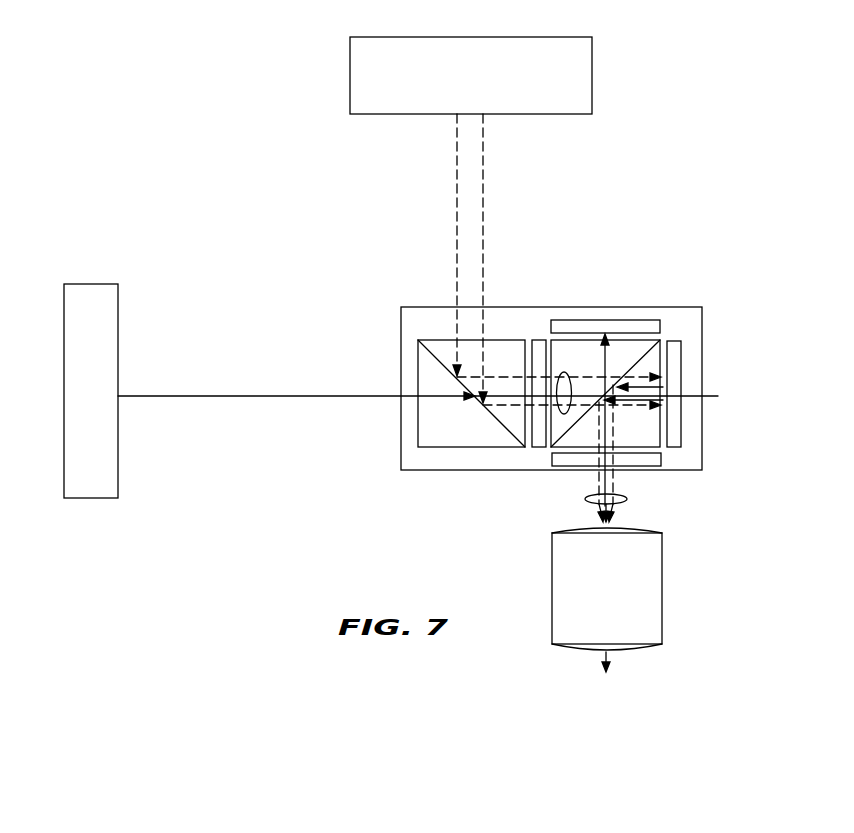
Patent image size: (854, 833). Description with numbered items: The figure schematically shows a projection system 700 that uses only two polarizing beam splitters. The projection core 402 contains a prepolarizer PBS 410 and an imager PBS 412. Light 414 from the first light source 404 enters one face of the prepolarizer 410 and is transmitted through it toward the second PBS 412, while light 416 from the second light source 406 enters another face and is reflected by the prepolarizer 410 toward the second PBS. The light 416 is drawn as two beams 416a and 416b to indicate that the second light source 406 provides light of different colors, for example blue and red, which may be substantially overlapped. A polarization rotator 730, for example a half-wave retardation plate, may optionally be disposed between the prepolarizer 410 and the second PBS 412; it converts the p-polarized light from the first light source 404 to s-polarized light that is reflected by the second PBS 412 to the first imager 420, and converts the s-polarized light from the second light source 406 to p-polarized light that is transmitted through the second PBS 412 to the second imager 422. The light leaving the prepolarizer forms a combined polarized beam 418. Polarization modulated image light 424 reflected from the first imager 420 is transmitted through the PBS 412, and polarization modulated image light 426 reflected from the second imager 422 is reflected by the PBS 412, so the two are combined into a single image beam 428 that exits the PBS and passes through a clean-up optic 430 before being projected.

The projection system 700 is at (158, 129).
The second light source 406 is at (350, 92).
The light from the second light source 416 is at (467, 258).
The first light beam 416a is at (457, 157).
The second light beam 416b is at (483, 168).
The first light source 404 is at (118, 316).
The light from the first light source 414 is at (272, 398).
The projection core 402 is at (584, 305).
The prepolarizer PBS 410 is at (432, 447).
The polarization rotator 730 is at (540, 447).
The combined polarized beam 418 is at (562, 372).
The first imager 420 is at (650, 320).
The polarization modulated image light 424 is at (613, 348).
The imager PBS 412 is at (653, 446).
The second imager 422 is at (681, 350).
The polarization modulated image light 426 is at (661, 387).
The clean-up optic 430 is at (664, 464).
The image beam 428 is at (583, 498).